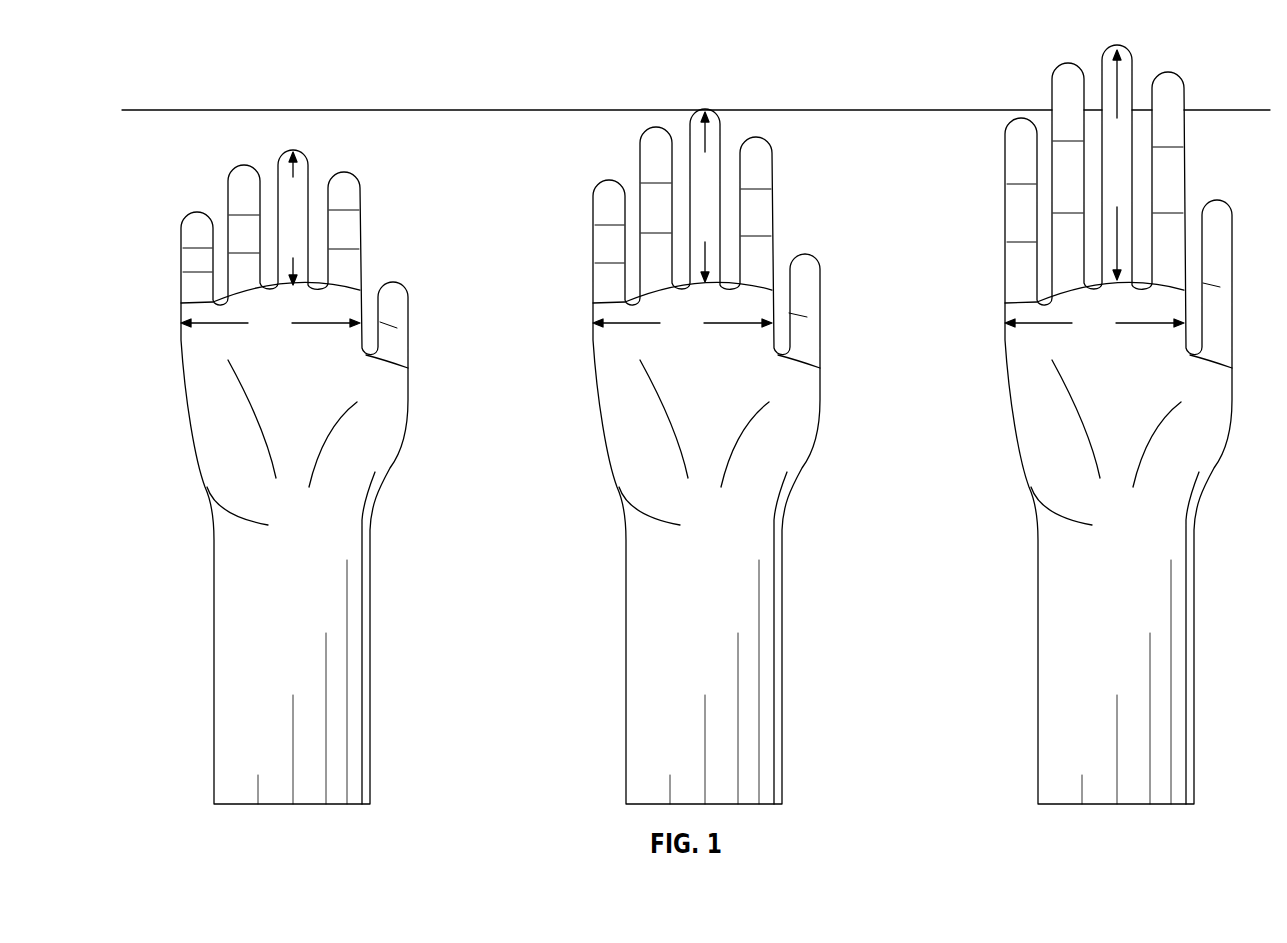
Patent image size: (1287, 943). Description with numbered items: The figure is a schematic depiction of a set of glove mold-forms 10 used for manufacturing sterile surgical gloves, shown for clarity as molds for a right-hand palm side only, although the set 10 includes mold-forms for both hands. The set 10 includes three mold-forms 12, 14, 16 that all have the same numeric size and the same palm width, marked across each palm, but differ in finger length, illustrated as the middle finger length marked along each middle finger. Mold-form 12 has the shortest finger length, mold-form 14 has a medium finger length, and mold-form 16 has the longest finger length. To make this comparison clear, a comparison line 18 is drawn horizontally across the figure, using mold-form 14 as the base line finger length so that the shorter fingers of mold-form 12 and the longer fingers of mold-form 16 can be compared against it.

The set of mold-forms 10 is at (152, 69).
The mold-form 12 is at (215, 688).
The mold-form 14 is at (628, 688).
The mold-form 16 is at (1037, 688).
The comparison line 18 is at (407, 109).